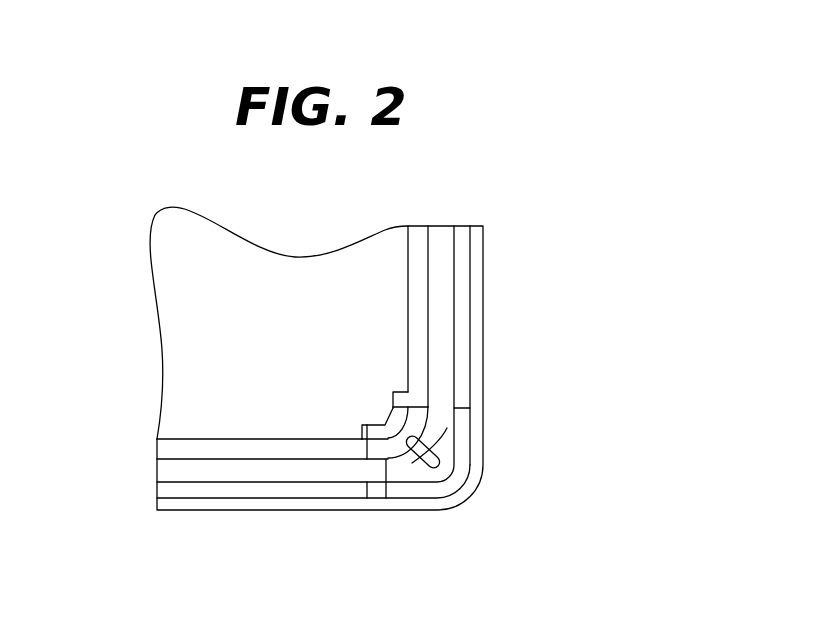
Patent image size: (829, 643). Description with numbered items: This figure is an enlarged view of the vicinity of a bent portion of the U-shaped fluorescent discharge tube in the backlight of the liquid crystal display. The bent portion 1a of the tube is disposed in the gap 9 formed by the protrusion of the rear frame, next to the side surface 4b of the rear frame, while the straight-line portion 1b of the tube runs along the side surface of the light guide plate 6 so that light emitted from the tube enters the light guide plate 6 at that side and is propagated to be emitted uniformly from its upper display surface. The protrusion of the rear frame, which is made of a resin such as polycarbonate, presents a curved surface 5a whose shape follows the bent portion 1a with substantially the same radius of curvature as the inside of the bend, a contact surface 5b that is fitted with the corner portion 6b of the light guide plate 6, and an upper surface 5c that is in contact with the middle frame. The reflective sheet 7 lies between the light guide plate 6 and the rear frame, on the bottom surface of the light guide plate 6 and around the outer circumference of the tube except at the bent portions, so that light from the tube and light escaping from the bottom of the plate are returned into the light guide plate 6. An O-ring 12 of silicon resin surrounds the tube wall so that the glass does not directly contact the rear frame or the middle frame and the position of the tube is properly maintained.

The light guide plate 6 is at (227, 255).
The corner portion of the light guide plate 6b is at (388, 425).
The curved surface 5a is at (383, 493).
The contact surface 5b is at (392, 422).
The upper surface 5c is at (393, 420).
The bent portion 1a is at (430, 443).
The straight-line portion 1b is at (440, 248).
The side surface of the rear frame 4b is at (457, 440).
The reflective sheet 7 is at (243, 493).
The gap 9 is at (420, 470).
The O-ring 12 is at (402, 467).